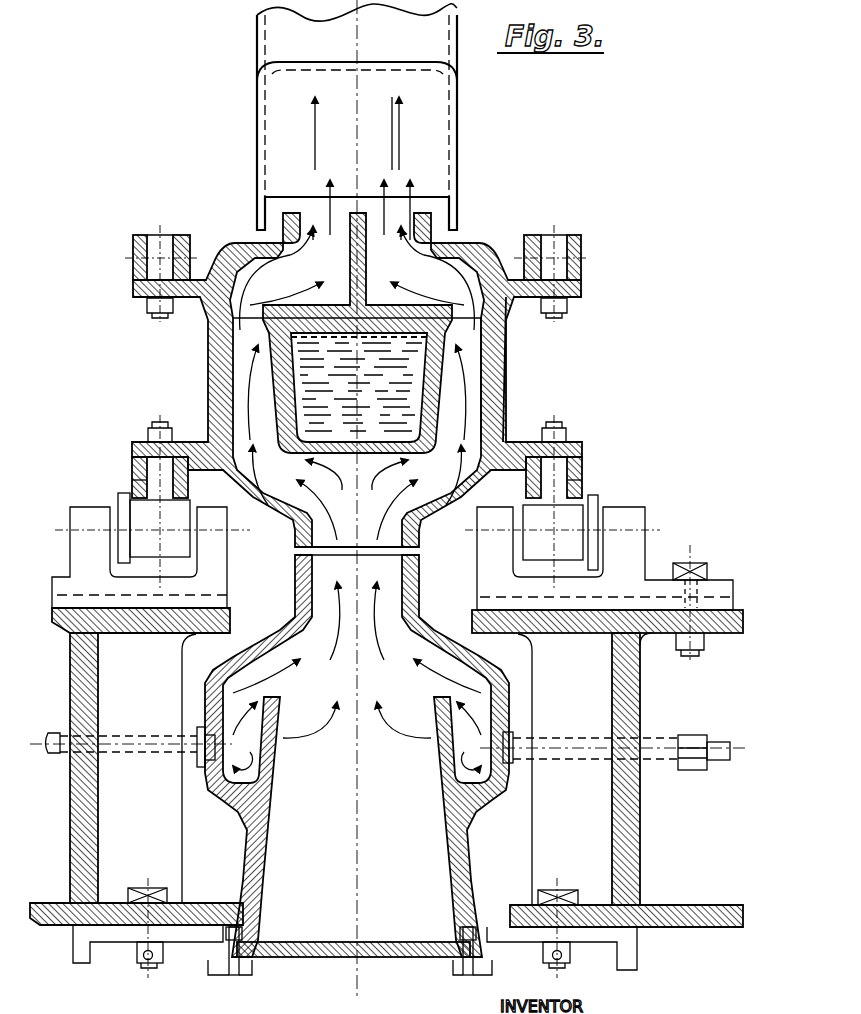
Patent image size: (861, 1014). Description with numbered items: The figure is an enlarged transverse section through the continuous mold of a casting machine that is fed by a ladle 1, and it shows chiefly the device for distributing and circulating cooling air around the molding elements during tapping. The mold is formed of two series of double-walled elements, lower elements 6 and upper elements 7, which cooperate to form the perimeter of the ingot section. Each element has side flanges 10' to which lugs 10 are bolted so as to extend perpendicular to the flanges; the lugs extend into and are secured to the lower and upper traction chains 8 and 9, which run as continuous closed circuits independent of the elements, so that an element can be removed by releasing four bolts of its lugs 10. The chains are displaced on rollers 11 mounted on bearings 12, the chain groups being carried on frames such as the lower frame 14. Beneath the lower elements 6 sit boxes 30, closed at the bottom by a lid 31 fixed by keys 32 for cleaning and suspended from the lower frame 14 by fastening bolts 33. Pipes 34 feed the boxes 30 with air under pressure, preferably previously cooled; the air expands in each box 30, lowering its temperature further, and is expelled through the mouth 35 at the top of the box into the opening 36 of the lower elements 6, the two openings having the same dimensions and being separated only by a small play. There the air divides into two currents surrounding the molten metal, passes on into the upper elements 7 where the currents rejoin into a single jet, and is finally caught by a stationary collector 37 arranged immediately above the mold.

The ladle 1 is at (478, 247).
The lower molding elements 6 is at (494, 376).
The upper molding elements 7 is at (357, 333).
The lower traction chain 8 is at (140, 482).
The upper traction chain 9 is at (133, 272).
The lugs 10 is at (358, 397).
The side flanges 10' is at (605, 289).
The rollers 11 is at (358, 531).
The bearings 12 is at (72, 546).
The lower frame 14 is at (92, 822).
The boxes 30 is at (357, 752).
The lid 31 is at (392, 957).
The keys 32 is at (233, 976).
The fastening bolts 33 is at (160, 958).
The pipes 34 is at (57, 733).
The mouth 35 is at (323, 556).
The opening 36 is at (370, 546).
The collector 37 is at (446, 140).